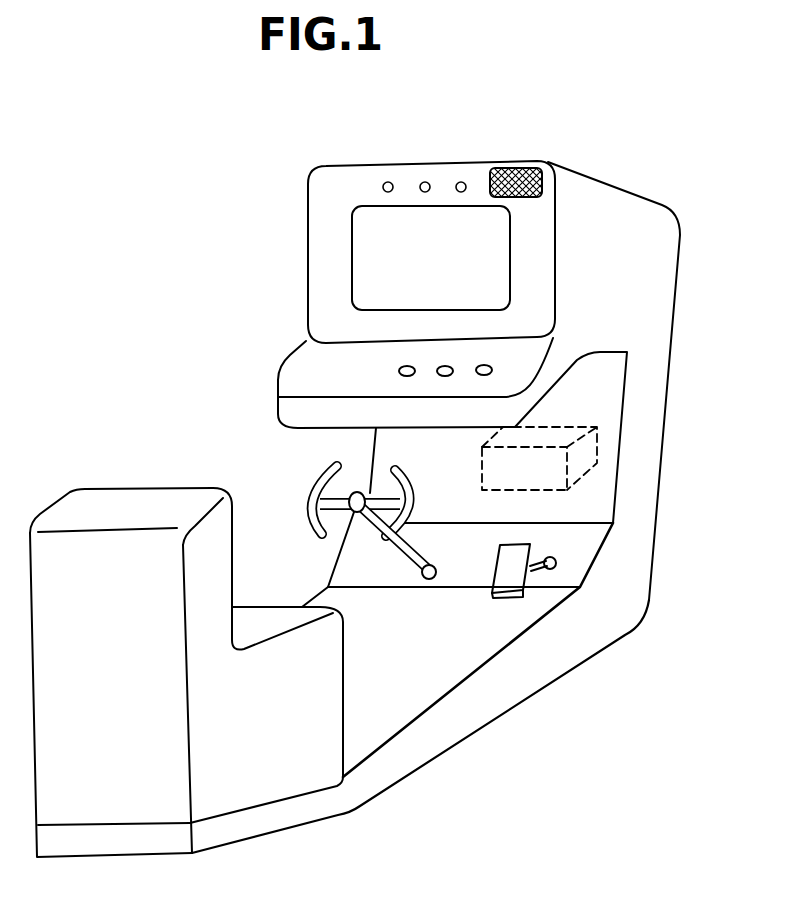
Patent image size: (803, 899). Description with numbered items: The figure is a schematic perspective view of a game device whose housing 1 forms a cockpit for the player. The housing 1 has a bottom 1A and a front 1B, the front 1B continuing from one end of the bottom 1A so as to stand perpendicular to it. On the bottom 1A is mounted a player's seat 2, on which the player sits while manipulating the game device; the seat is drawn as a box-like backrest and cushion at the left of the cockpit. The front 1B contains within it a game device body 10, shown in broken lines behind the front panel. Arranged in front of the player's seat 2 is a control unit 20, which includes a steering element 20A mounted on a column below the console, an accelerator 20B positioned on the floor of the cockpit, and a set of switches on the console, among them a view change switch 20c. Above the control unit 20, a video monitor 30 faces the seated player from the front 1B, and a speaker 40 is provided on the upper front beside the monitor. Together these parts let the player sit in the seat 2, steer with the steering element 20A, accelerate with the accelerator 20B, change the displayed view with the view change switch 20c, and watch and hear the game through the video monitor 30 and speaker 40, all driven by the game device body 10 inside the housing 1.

The housing 1 is at (466, 507).
The bottom 1A is at (570, 657).
The front 1B is at (647, 455).
The player's seat 2 is at (113, 488).
The game device body 10 is at (593, 458).
The control unit 20 is at (328, 448).
The steering element 20A is at (342, 517).
The accelerator 20B is at (503, 582).
The view change switch 20c is at (399, 369).
The video monitor 30 is at (360, 248).
The speaker 40 is at (518, 167).